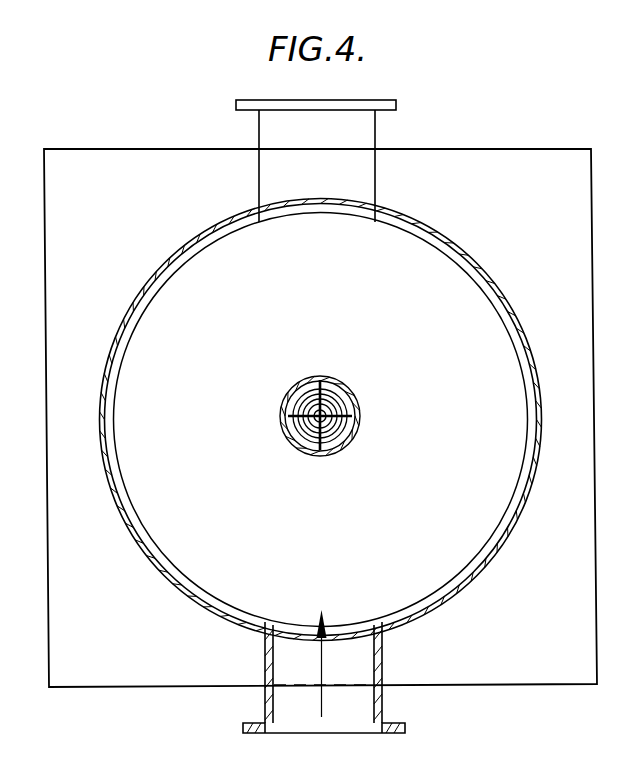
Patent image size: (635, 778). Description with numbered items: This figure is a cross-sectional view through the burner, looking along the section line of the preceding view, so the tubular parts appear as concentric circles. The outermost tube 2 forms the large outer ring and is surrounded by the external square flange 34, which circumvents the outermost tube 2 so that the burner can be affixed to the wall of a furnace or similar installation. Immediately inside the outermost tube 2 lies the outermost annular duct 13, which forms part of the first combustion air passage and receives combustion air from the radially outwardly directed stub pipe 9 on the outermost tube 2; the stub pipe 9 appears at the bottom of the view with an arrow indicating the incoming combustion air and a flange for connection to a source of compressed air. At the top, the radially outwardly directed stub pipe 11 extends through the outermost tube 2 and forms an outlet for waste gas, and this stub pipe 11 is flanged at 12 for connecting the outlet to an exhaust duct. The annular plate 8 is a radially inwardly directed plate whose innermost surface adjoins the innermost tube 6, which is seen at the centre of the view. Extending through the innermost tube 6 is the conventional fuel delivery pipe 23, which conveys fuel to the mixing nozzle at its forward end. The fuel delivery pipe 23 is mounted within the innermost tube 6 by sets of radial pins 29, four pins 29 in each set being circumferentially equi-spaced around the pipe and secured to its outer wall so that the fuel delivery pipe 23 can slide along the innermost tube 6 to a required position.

The outermost tube 2 is at (430, 230).
The innermost tube 6 is at (335, 343).
The annular plate 8 is at (460, 292).
The stub pipe 9 is at (382, 657).
The stub pipe 11 is at (370, 128).
The flange 12 is at (428, 718).
The annular duct 13 is at (213, 238).
The fuel delivery pipe 23 is at (327, 410).
The radial pins 29 is at (346, 440).
The external square flange 34 is at (552, 675).